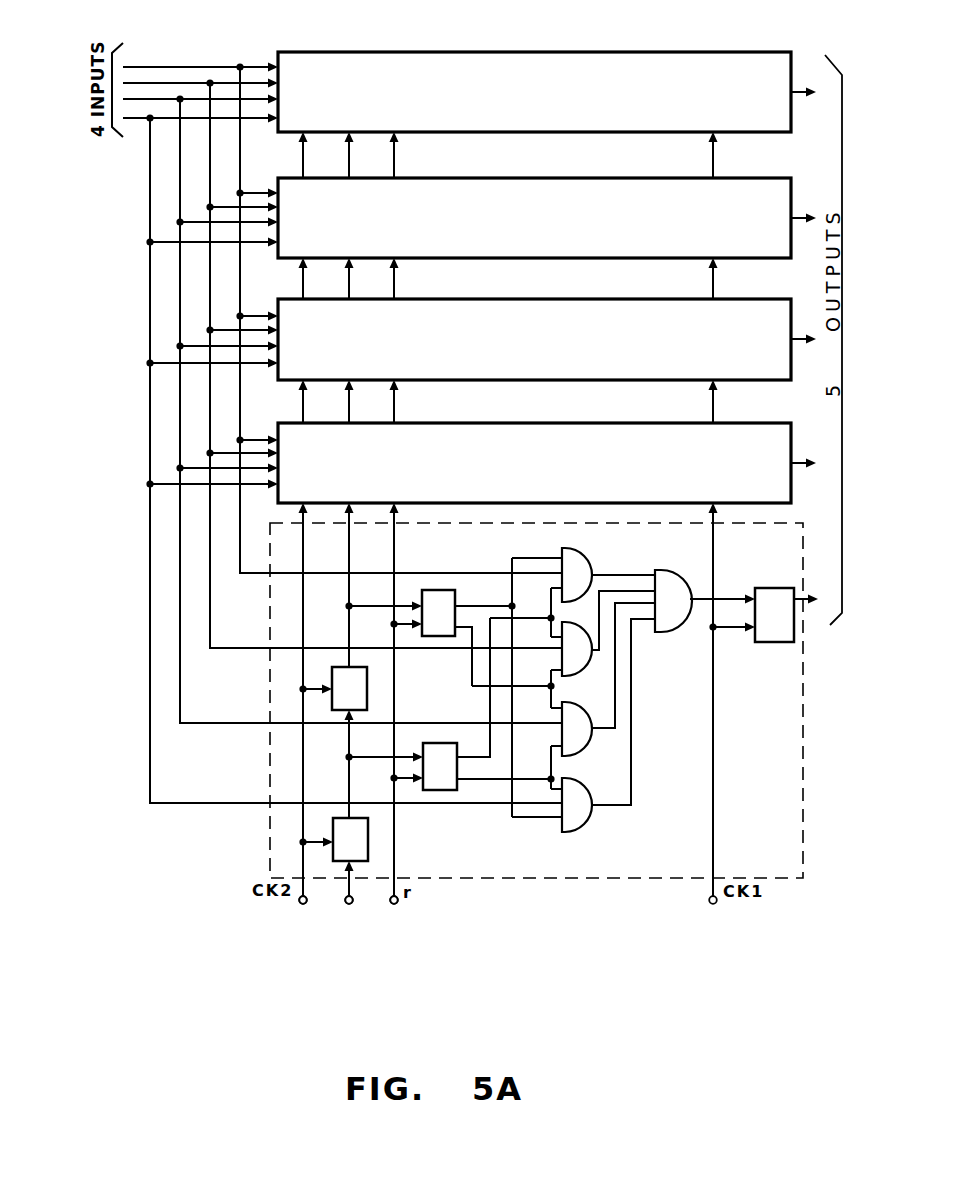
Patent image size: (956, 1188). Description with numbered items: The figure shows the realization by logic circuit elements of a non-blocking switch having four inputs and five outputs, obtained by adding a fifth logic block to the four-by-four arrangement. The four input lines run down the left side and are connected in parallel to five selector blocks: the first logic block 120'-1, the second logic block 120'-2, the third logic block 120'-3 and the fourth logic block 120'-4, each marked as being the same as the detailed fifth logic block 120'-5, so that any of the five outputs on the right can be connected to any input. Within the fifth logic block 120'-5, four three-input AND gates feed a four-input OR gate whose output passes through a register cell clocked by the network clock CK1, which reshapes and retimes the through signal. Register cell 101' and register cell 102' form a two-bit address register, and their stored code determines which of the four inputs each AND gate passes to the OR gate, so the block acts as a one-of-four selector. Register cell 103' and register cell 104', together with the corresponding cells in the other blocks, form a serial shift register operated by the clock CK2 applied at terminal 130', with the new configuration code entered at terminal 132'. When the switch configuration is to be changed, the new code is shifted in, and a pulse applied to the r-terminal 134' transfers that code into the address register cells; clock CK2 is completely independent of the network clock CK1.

The first logic block 120'-1 is at (534, 70).
The second logic block 120'-2 is at (534, 202).
The third logic block 120'-3 is at (534, 323).
The fourth logic block 120'-4 is at (534, 447).
The fifth logic block 120'-5 is at (536, 733).
The register cell 101' is at (428, 610).
The register cell 102' is at (419, 731).
The register cell 103' is at (375, 686).
The register cell 104' is at (372, 845).
The clock CK2 terminal 130' is at (298, 928).
The serial data input terminal 132' is at (375, 928).
The r-terminal 134' is at (439, 914).